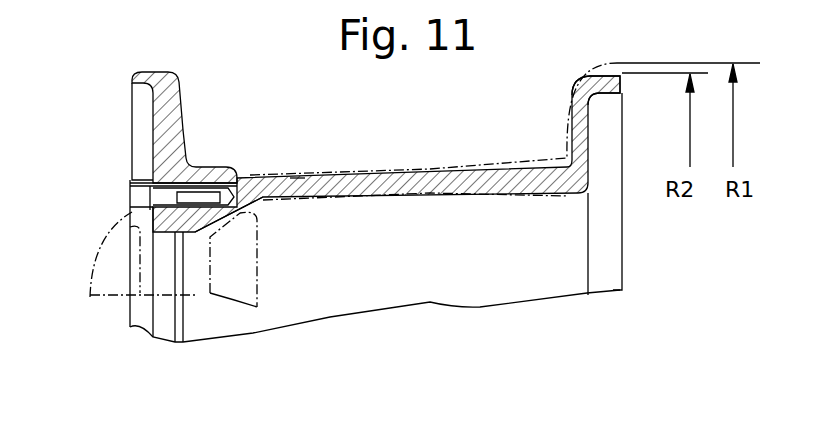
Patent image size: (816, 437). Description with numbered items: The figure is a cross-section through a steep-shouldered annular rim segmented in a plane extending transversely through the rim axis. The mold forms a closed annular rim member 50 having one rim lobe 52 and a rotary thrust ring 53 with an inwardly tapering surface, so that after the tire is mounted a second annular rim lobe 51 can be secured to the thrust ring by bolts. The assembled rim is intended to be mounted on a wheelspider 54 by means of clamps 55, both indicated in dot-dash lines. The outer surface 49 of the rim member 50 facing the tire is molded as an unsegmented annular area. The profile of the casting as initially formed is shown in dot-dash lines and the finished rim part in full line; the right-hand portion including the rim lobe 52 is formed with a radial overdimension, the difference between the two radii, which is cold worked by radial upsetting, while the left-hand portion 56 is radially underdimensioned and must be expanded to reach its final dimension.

The outer surface 49 is at (535, 172).
The rim member 50 is at (415, 272).
The second annular rim lobe 51 is at (178, 121).
The rim lobe 52 is at (572, 122).
The rotary thrust ring 53 is at (186, 230).
The wheelspider 54 is at (228, 284).
The clamps 55 is at (112, 273).
The radially underdimensioned portion 56 is at (296, 179).